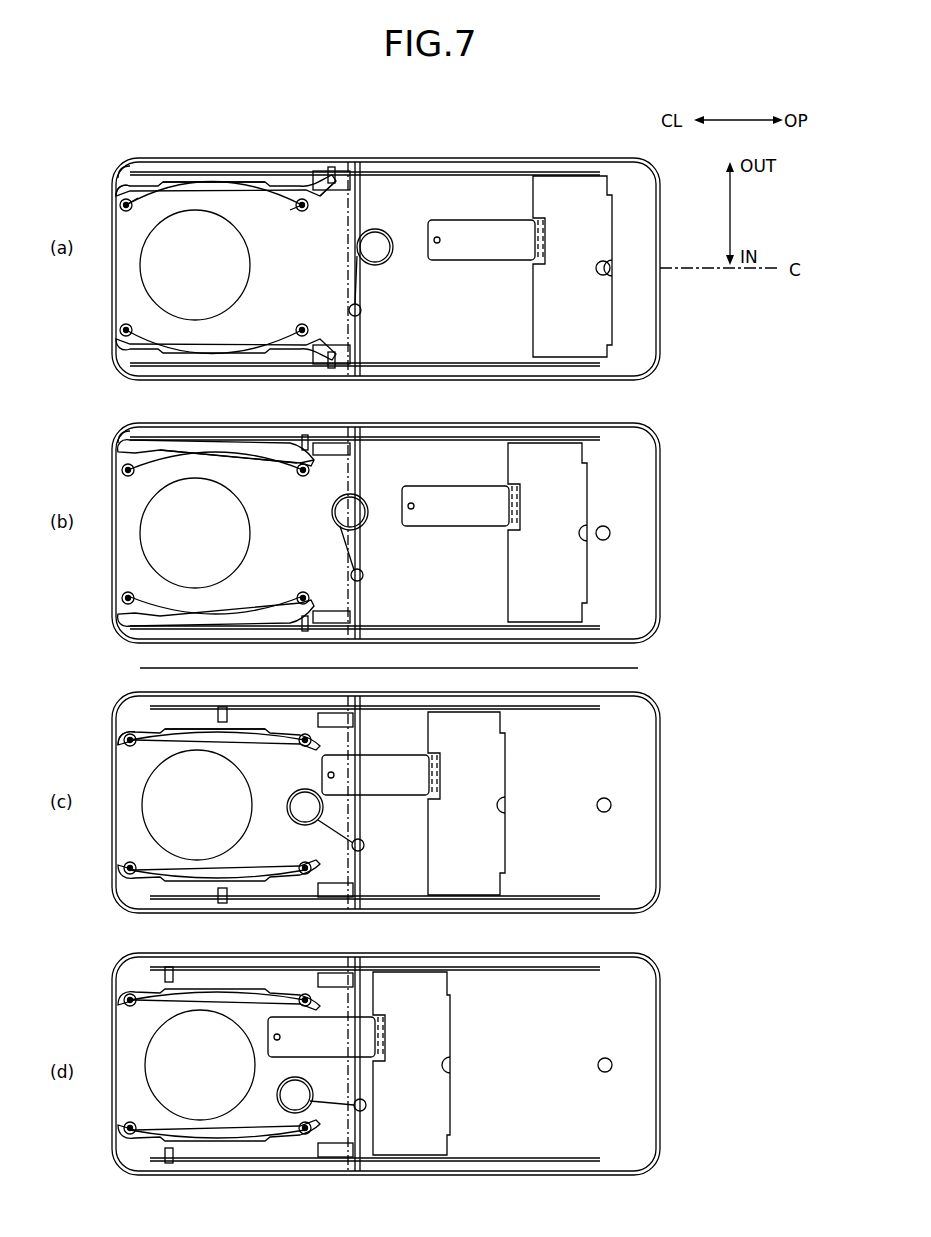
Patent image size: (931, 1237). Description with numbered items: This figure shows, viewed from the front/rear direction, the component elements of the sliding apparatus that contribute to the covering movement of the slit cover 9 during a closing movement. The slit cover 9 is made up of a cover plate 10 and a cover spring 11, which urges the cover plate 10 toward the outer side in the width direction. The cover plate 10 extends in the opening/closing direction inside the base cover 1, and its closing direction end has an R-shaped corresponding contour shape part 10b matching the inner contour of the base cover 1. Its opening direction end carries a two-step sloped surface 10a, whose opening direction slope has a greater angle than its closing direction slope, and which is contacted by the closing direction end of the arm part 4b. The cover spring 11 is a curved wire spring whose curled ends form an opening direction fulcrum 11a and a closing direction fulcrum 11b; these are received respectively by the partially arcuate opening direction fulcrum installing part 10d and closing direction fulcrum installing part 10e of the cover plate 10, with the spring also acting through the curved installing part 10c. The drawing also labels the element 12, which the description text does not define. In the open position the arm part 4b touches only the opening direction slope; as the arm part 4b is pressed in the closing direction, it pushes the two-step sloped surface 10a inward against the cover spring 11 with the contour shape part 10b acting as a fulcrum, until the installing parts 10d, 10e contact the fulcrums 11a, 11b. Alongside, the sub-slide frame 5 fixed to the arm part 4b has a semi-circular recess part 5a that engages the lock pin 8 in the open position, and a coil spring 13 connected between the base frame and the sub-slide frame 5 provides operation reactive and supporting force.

The base cover 1 is at (660, 345).
The arm part 4b is at (265, 968).
The sub-slide frame 5 is at (430, 1020).
The recess part 5a is at (440, 1066).
The lock pin 8 is at (610, 266).
The slit cover 9 is at (288, 115).
The cover plate 10 is at (205, 178).
The two-step sloped surface 10a is at (318, 171).
The corresponding contour shape part 10b is at (119, 162).
The curved installing part 10c is at (175, 182).
The opening direction fulcrum installing part 10d is at (306, 200).
The closing direction fulcrum installing part 10e is at (116, 190).
The cover spring 11 is at (263, 186).
The opening direction fulcrum 11a is at (306, 220).
The closing direction fulcrum 11b is at (120, 205).
The pivot pin 12 is at (124, 211).
The spring 13 is at (362, 297).